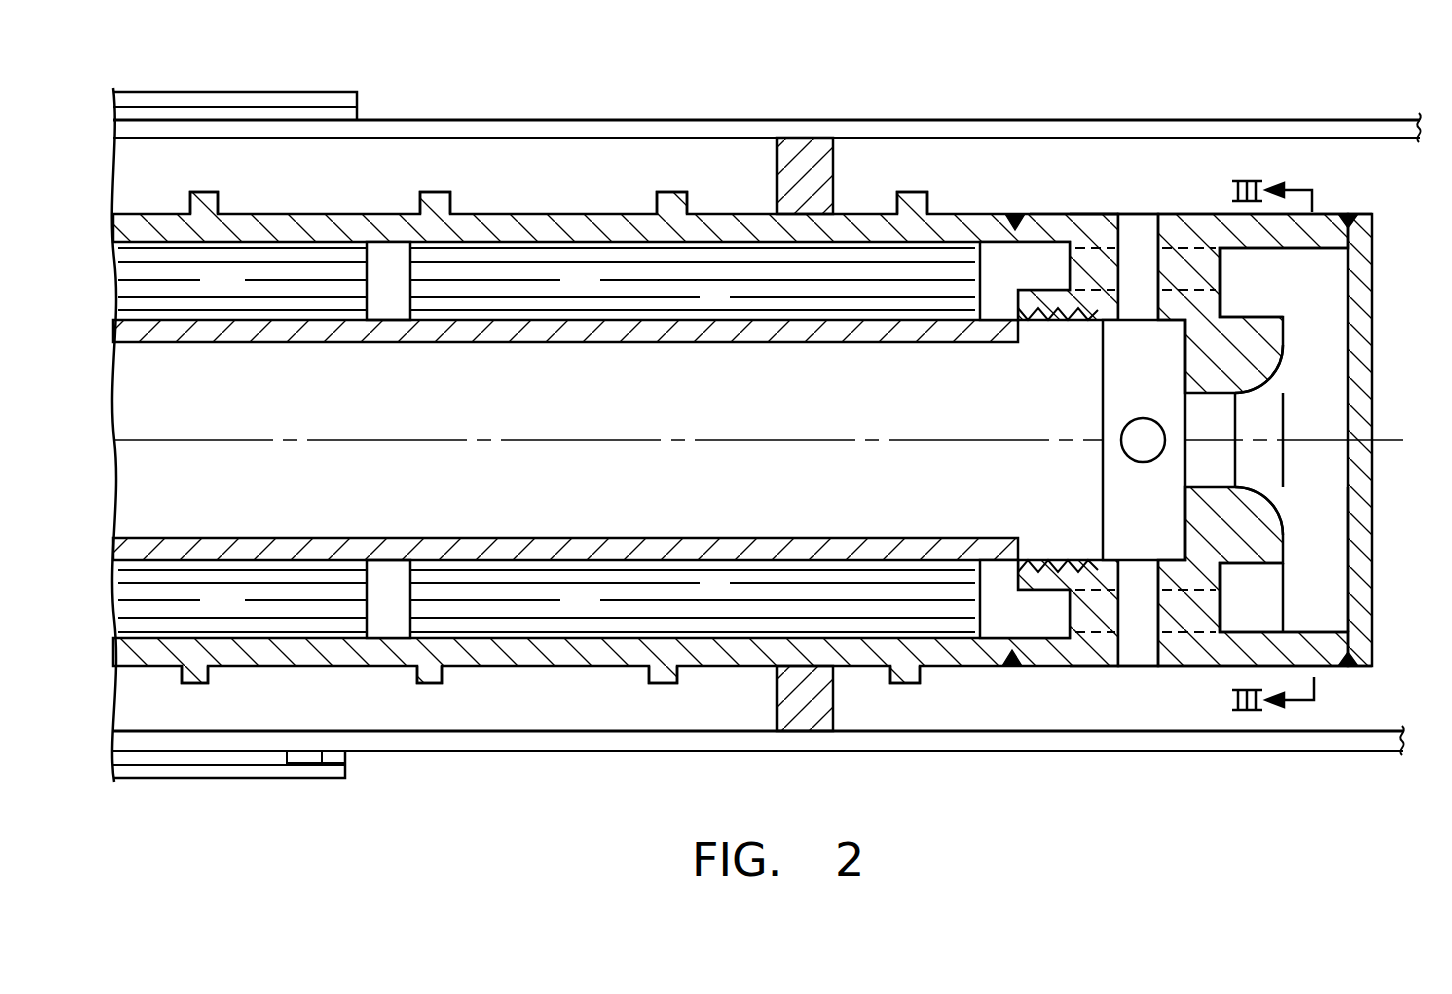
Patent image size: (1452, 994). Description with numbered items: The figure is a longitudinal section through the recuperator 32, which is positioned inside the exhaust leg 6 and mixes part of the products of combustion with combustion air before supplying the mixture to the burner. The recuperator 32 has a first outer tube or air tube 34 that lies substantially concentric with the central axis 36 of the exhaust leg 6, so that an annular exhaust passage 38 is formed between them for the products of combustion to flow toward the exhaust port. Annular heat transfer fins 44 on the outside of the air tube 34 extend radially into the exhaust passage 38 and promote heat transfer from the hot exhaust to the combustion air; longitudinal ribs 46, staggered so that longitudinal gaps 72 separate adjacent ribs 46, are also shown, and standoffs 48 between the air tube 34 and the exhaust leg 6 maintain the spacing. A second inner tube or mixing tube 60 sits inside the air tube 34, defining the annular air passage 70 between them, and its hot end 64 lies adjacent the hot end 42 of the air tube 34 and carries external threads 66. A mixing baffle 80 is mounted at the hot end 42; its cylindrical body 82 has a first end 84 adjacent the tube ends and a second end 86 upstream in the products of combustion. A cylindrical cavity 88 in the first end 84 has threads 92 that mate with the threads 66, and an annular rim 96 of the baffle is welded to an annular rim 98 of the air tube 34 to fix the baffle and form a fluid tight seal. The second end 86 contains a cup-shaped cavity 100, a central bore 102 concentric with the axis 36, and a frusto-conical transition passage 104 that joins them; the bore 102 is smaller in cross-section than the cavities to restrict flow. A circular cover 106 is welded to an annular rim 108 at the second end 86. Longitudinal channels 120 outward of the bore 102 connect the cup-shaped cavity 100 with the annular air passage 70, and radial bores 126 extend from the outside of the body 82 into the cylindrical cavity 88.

The exhaust leg 6 is at (504, 131).
The recuperator 32 is at (277, 172).
The air tube 34 is at (395, 655).
The central axis 36 is at (497, 440).
The annular exhaust passage 38 is at (228, 711).
The hot end of the air tube 42 is at (948, 654).
The annular heat transfer fins 44 is at (450, 200).
The longitudinal ribs 46 is at (230, 284).
The standoffs 48 is at (776, 170).
The mixing tube 60 is at (526, 548).
The hot end of the mixing tube 64 is at (905, 334).
The external threads 66 is at (1056, 326).
The annular air passage 70 is at (1003, 633).
The longitudinal gaps 72 is at (388, 302).
The mixing baffle 80 is at (1345, 196).
The cylindrical body 82 is at (1172, 214).
The first end of the mixing baffle 84 is at (1063, 214).
The second end of the mixing baffle 86 is at (1388, 668).
The cylindrical cavity 88 is at (1023, 473).
The threads 92 is at (1092, 580).
The annular rim 96 is at (1036, 214).
The annular rim 98 is at (986, 214).
The cup-shaped cavity 100 is at (1335, 606).
The central bore 102 is at (1220, 464).
The frusto-conical transition passage 104 is at (1262, 362).
The circular cover 106 is at (1362, 354).
The annular rim 108 is at (1375, 216).
The longitudinal channels 120 is at (1225, 262).
The radial bores 126 is at (1138, 214).